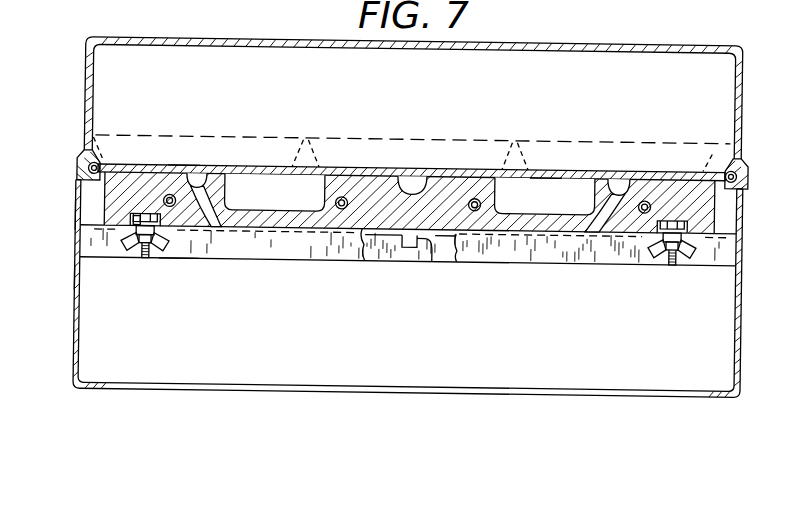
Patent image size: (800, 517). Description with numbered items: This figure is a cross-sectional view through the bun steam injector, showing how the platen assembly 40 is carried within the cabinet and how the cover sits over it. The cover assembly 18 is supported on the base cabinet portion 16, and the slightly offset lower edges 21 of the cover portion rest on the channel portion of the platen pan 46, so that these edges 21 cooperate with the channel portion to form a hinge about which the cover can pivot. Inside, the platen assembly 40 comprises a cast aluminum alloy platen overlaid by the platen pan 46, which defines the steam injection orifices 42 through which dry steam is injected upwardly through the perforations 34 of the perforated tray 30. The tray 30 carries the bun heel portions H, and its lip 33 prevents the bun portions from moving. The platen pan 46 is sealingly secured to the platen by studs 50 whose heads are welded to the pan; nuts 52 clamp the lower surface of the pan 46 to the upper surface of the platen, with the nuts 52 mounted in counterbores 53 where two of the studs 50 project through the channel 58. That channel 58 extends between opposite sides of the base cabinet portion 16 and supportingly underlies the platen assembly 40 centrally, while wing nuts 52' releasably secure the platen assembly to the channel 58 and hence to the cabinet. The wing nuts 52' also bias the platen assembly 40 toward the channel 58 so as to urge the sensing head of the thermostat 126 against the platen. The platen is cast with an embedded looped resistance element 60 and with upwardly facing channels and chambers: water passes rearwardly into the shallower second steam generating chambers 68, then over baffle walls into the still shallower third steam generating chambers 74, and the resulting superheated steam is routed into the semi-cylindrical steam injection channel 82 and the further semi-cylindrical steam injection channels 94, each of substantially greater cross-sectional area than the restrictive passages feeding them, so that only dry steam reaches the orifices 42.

The base cabinet portion 16 is at (737, 334).
The cover assembly 18 is at (82, 78).
The lower edges of cover portion 21 is at (77, 170).
The perforated tray 30 is at (347, 171).
The lip 33 is at (98, 163).
The perforations 34 is at (179, 164).
The platen assembly 40 is at (4, 223).
The steam injection orifices 42 is at (200, 166).
The platen pan 46 is at (547, 170).
The studs 50 is at (145, 257).
The nuts 52 is at (455, 202).
The wing nuts 52' is at (409, 260).
The counterbores 53 is at (137, 215).
The channel 58 is at (540, 246).
The looped resistance element 60 is at (178, 281).
The second steam generating chambers 68 is at (289, 197).
The third steam generating chambers 74 is at (0, 275).
The semi-cylindrical steam injection channel 82 is at (412, 190).
The semi-cylindrical steam injection channels 94 is at (218, 257).
The thermostat 126 is at (433, 257).
The bun heel portions H is at (259, 134).